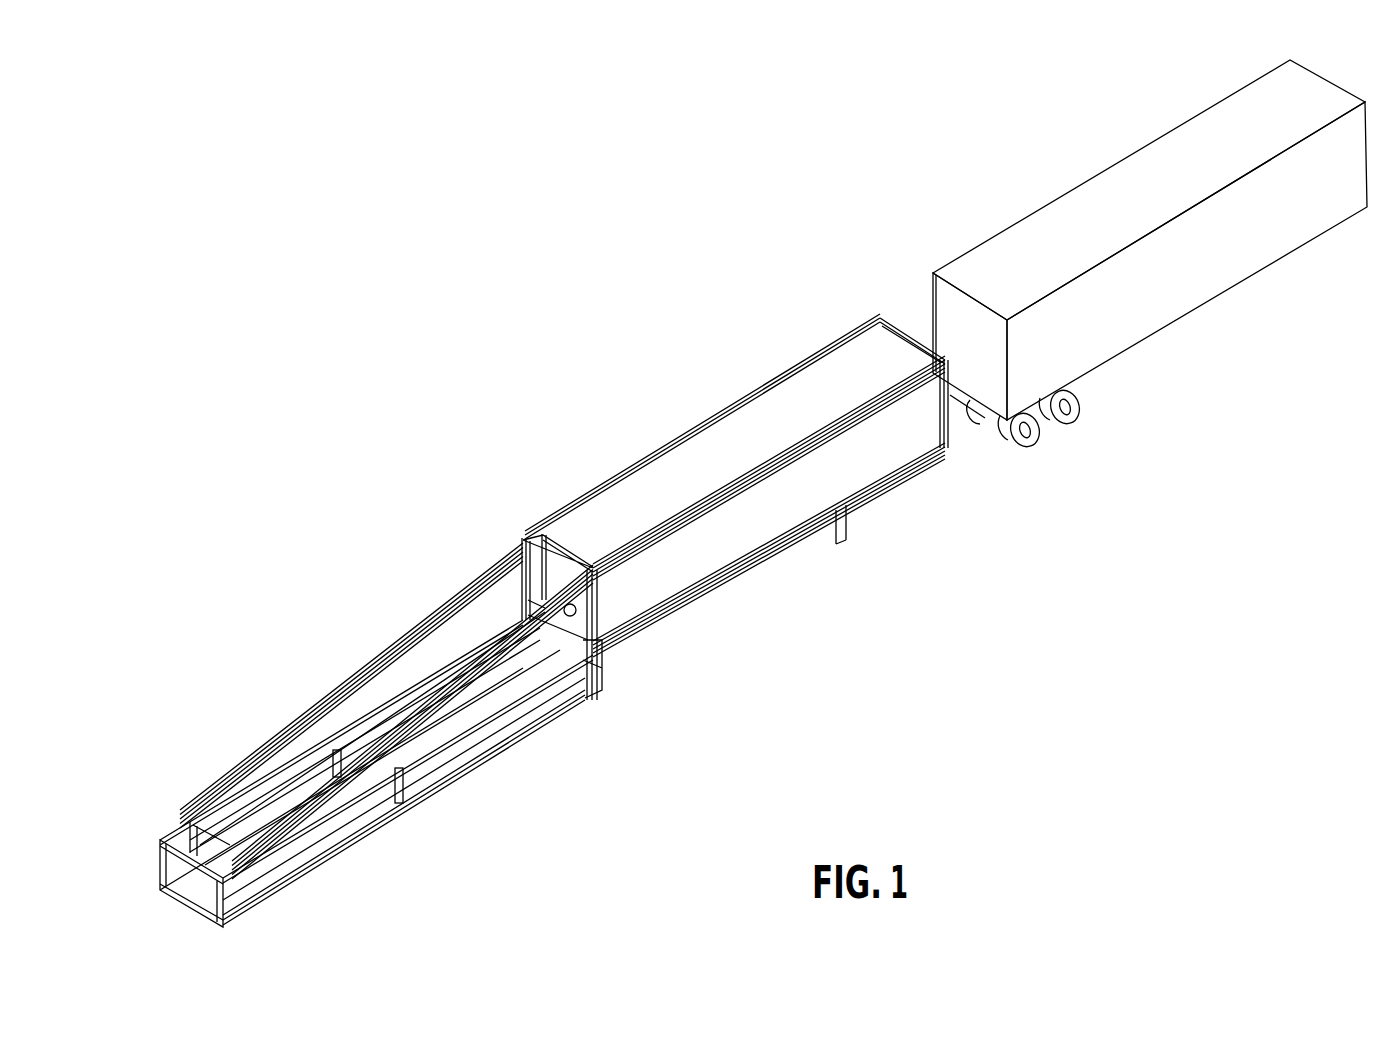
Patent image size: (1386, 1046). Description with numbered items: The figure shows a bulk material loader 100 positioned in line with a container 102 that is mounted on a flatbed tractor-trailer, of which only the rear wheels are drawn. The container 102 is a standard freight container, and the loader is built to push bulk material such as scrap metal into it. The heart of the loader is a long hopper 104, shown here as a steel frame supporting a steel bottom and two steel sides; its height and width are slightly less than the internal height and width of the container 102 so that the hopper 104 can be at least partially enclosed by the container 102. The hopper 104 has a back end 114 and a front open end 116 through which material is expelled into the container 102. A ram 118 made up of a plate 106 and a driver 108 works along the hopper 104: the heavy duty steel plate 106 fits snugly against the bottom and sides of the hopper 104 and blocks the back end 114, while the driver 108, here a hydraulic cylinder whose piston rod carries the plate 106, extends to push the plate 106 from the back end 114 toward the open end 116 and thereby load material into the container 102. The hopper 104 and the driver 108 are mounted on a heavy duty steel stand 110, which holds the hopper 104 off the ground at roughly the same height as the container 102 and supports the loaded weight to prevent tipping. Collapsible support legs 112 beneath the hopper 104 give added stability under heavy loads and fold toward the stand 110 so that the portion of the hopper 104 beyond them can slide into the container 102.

The bulk material loader 100 is at (495, 371).
The container 102 is at (1128, 152).
The hopper 104 is at (885, 480).
The plate 106 is at (520, 543).
The driver 108 is at (216, 800).
The stand 110 is at (520, 758).
The collapsible support legs 112 is at (846, 553).
The back end 114 is at (602, 634).
The open end 116 is at (887, 383).
The ram 118 is at (496, 622).